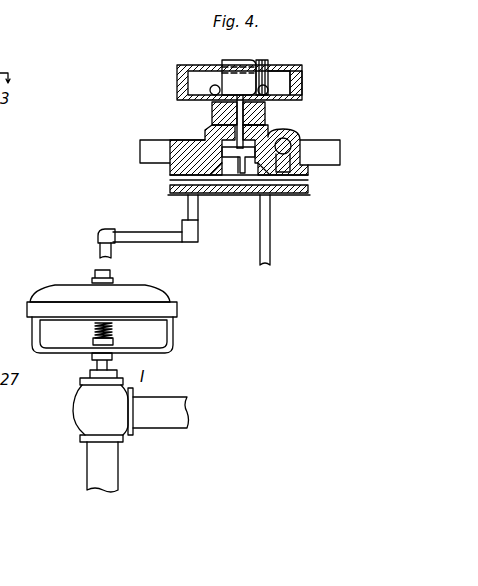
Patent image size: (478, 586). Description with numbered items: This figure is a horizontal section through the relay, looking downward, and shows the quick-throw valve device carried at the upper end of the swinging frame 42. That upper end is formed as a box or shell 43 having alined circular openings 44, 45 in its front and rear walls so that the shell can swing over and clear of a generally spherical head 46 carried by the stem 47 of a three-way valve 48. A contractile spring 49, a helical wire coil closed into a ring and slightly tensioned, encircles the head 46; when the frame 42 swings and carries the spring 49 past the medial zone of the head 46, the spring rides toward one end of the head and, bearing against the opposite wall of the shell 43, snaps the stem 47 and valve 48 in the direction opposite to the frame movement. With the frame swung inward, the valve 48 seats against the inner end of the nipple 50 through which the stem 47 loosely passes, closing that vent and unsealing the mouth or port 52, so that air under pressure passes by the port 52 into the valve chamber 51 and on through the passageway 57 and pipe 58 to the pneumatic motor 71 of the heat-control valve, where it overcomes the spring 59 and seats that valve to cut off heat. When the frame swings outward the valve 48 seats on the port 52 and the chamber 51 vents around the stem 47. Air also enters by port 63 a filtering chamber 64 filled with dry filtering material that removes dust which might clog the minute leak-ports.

The swinging frame 42 is at (302, 82).
The box or shell 43 is at (197, 82).
The circular opening 44 is at (264, 66).
The circular opening 45 is at (258, 95).
The head 46 is at (230, 60).
The stem 47 is at (212, 115).
The three-way valve 48 is at (207, 137).
The contractile spring 49 is at (290, 68).
The nipple 50 is at (270, 120).
The valve chamber 51 is at (272, 200).
The port 52 is at (241, 200).
The passageway 57 is at (175, 196).
The pipe 58 is at (198, 232).
The spring 59 is at (114, 332).
The port 63 is at (290, 170).
The filtering chamber 64 is at (292, 138).
The pneumatic motor 71 is at (177, 311).